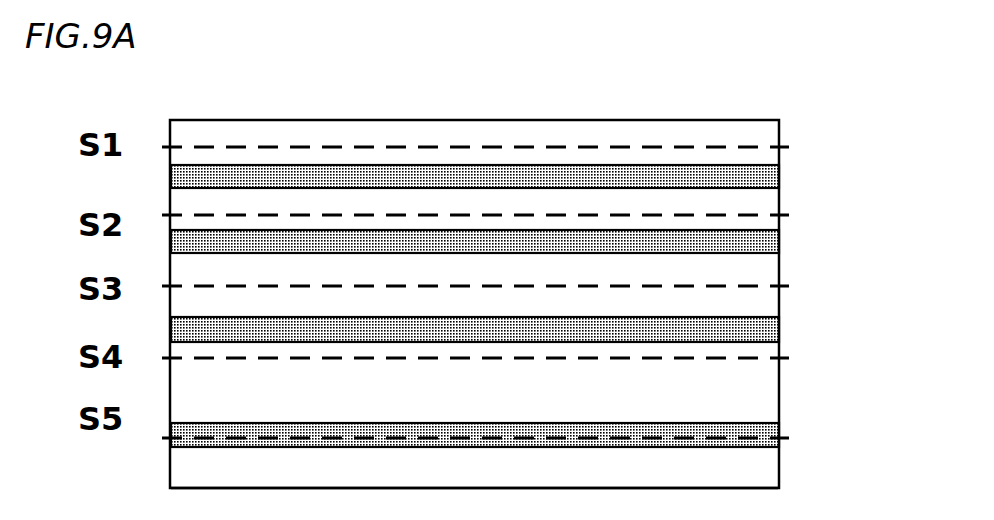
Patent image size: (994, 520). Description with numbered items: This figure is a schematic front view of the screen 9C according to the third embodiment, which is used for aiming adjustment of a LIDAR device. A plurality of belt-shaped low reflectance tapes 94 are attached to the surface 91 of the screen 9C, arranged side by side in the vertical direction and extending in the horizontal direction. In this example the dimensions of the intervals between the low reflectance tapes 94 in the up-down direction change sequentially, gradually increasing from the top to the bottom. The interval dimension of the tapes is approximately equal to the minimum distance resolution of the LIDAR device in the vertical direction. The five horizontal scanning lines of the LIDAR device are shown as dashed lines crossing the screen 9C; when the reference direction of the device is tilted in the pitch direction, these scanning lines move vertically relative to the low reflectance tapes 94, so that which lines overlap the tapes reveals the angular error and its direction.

The screen 9C is at (683, 120).
The low reflectance tapes 94 is at (779, 422).
The surface 91 is at (757, 472).